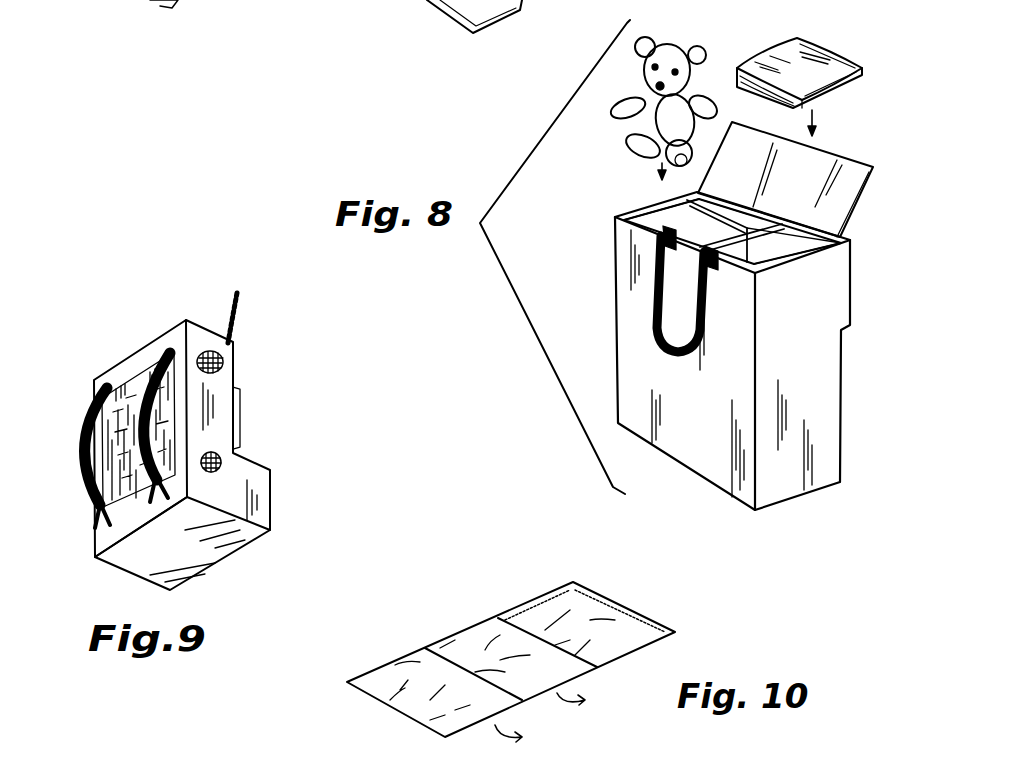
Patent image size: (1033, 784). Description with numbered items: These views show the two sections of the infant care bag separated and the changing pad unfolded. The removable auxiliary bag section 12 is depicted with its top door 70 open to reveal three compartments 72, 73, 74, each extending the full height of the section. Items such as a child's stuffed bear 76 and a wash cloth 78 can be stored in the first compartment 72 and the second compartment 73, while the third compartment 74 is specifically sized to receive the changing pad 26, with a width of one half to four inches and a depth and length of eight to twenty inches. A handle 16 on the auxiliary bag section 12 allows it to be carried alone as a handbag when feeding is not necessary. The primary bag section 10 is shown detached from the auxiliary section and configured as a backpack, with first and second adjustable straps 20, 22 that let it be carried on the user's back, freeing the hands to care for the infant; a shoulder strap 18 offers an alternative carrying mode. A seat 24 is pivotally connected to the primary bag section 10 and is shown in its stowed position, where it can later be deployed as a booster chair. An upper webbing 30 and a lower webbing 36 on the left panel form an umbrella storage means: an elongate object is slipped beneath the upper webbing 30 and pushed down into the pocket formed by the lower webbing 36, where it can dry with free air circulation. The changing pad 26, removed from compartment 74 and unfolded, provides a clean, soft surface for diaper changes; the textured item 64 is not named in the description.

In FIG. 8, the primary bag section 10 is at (270, 8).
In FIG. 9, the primary bag section 10 is at (277, 513).
In FIG. 8, the removable auxiliary bag section 12 is at (713, 467).
In FIG. 8, the second handle 16 is at (688, 355).
In FIG. 9, the shoulder strap 18 is at (240, 312).
In FIG. 9, the first adjustable strap 20 is at (83, 417).
In FIG. 9, the second adjustable strap 22 is at (150, 367).
In FIG. 9, the seat 24 is at (243, 408).
In FIG. 10, the changing pad 26 is at (472, 637).
In FIG. 9, the upper webbing 30 is at (233, 358).
In FIG. 9, the lower webbing 36 is at (223, 461).
In FIG. 8, the cushion 64 is at (430, 18).
In FIG. 8, the top door 70 is at (842, 172).
In FIG. 8, the first compartment 72 is at (628, 216).
In FIG. 8, the second compartment 73 is at (767, 240).
In FIG. 8, the third compartment 74 is at (730, 210).
In FIG. 8, the child's stuffed bear 76 is at (669, 46).
In FIG. 8, the wash cloth 78 is at (820, 57).